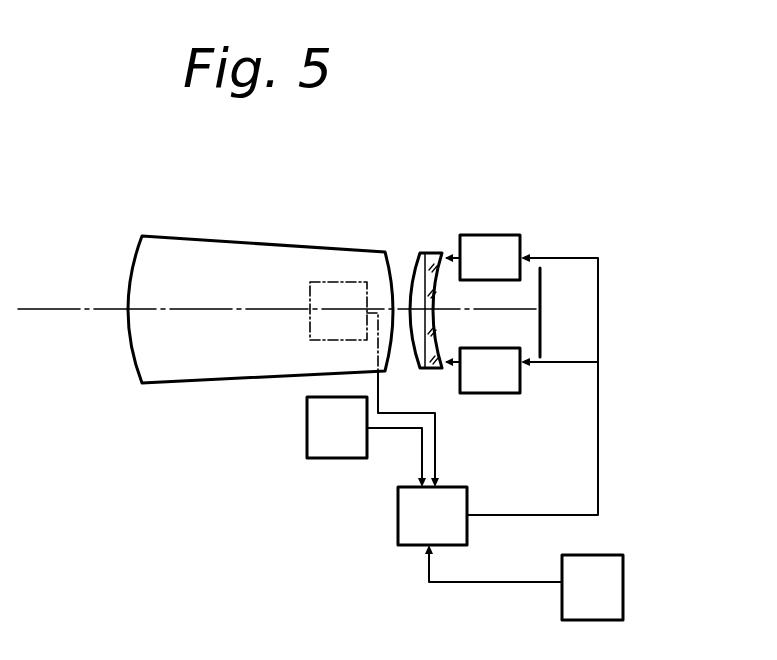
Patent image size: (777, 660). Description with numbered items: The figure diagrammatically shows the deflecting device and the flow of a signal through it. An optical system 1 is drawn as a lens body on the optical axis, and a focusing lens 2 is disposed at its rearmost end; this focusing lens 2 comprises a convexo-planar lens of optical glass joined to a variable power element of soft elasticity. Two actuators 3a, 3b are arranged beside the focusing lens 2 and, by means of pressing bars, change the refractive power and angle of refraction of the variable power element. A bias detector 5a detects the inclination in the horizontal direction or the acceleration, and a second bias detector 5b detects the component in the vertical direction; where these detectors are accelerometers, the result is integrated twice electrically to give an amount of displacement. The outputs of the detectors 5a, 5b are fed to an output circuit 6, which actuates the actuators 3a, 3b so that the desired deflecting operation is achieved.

The optical system 1 is at (443, 223).
The focusing lens 2 is at (421, 253).
The actuator 3a is at (482, 257).
The actuator 3b is at (482, 370).
The bias detector 5a is at (310, 335).
The bias detector 5b is at (325, 447).
The output circuit 6 is at (405, 522).